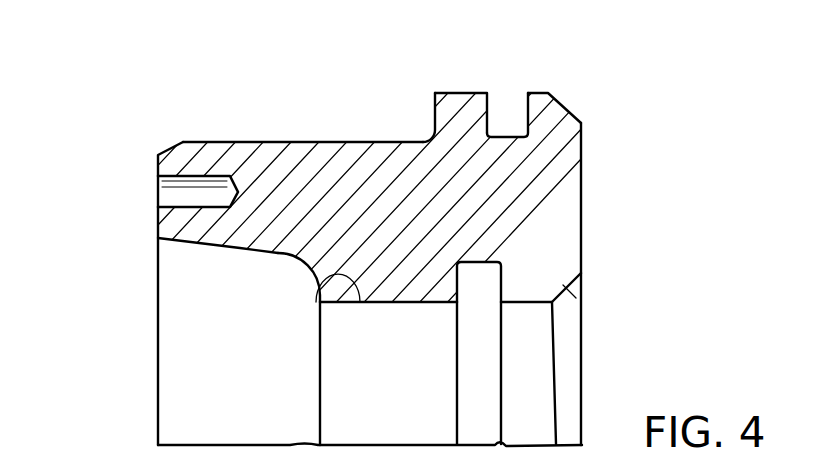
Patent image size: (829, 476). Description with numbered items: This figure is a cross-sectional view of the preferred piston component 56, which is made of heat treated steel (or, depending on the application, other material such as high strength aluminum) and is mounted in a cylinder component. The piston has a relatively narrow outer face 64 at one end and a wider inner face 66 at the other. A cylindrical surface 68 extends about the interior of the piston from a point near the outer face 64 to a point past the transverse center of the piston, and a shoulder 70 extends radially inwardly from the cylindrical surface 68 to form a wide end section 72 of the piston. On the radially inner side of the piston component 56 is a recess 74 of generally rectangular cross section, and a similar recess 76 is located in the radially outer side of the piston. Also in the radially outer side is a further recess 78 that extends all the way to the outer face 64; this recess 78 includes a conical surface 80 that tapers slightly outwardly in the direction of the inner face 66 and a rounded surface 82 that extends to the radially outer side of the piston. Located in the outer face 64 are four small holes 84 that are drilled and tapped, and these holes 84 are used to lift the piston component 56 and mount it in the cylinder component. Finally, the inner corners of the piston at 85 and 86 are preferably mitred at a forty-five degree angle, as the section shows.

The piston component 56 is at (288, 106).
The outer face 64 is at (158, 223).
The inner face 66 is at (583, 215).
The cylindrical surface 68 is at (325, 142).
The shoulder 70 is at (433, 110).
The wide end section 72 is at (463, 103).
The recess 74 is at (502, 118).
The recess 76 is at (480, 283).
The further recess 78 is at (291, 270).
The conical surface 80 is at (243, 250).
The rounded surface 82 is at (357, 303).
The small holes 84 is at (156, 196).
The inner corner 85 is at (560, 110).
The inner corner 86 is at (583, 303).